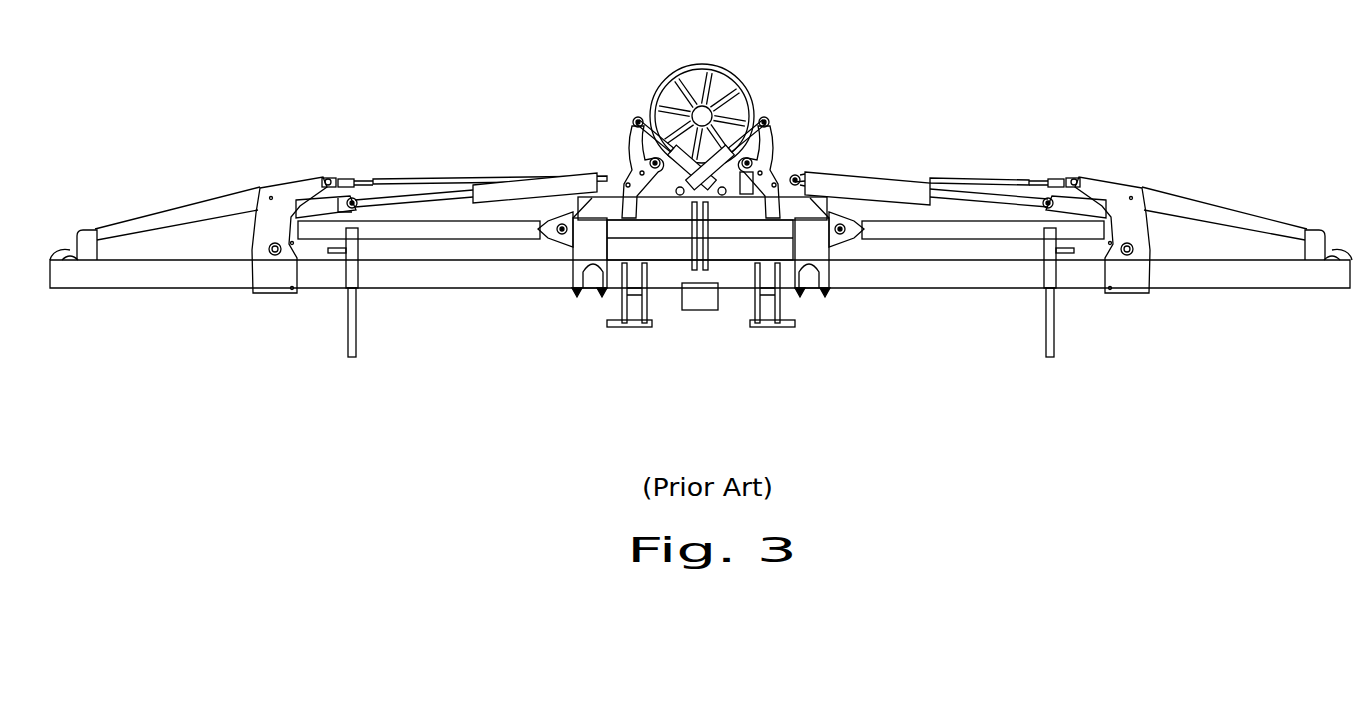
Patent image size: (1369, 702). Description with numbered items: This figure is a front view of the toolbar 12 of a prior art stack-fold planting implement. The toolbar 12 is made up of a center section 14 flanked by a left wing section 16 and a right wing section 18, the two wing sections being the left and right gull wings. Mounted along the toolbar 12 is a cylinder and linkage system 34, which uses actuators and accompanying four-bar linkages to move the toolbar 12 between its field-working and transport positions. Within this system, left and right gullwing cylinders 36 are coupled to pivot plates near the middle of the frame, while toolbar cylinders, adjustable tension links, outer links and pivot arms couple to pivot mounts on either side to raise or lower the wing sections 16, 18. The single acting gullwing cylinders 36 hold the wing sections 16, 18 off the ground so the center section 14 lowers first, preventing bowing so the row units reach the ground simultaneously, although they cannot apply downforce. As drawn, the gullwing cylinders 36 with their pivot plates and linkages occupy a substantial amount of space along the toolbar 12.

The toolbar 12 is at (507, 305).
The center section 14 is at (663, 277).
The left wing section 16 is at (145, 278).
The right wing section 18 is at (1257, 275).
The cylinder and linkage system 34 is at (933, 153).
The gullwing cylinder 36 is at (717, 157).